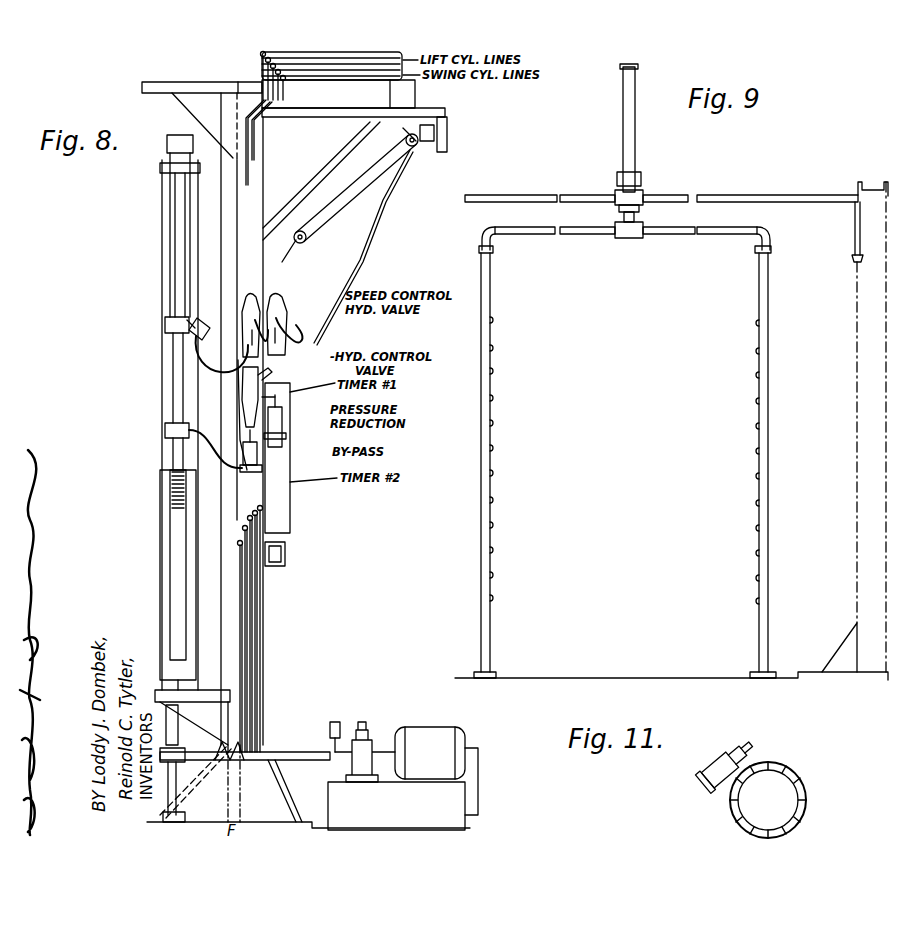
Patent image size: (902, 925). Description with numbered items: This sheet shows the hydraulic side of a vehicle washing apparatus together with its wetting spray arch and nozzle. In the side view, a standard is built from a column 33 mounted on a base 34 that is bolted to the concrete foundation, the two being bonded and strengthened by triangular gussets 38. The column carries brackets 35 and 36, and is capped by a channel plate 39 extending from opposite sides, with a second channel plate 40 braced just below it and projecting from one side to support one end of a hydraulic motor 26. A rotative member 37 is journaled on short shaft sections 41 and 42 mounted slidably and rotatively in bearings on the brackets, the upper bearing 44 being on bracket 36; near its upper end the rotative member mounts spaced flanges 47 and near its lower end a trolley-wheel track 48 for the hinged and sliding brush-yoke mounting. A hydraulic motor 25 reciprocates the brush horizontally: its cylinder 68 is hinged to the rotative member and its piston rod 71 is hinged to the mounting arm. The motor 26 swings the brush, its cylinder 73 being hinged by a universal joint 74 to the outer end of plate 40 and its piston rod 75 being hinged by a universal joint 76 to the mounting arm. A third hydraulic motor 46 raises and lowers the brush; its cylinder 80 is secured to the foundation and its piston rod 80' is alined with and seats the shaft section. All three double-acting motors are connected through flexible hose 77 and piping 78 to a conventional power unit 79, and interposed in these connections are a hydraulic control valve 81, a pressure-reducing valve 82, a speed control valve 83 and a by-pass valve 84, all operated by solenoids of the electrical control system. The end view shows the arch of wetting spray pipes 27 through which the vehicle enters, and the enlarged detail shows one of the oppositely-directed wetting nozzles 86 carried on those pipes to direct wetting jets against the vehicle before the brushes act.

In FIG. 8, the hydraulic motor 25 is at (164, 371).
In FIG. 8, the hydraulic motor 26 is at (373, 206).
In FIG. 9, the wetting spray pipe 27 is at (490, 514).
In FIG. 8, the column 33 is at (255, 505).
In FIG. 8, the base 34 is at (290, 812).
In FIG. 8, the bracket 35 is at (338, 94).
In FIG. 8, the bracket 36 is at (230, 695).
In FIG. 8, the rotative member 37 is at (162, 263).
In FIG. 8, the triangular gusset 38 is at (278, 778).
In FIG. 8, the channel plate 39 is at (415, 86).
In FIG. 8, the channel plate 40 is at (440, 112).
In FIG. 8, the shaft section 41 is at (178, 112).
In FIG. 8, the shaft section 42 is at (191, 726).
In FIG. 8, the bearing 44 is at (178, 688).
In FIG. 8, the hydraulic motor 46 is at (159, 796).
In FIG. 8, the flange 47 is at (180, 200).
In FIG. 8, the trolley-wheel track 48 is at (168, 522).
In FIG. 8, the cylinder 68 is at (170, 292).
In FIG. 8, the piston rod 71 is at (176, 447).
In FIG. 8, the cylinder 73 is at (392, 175).
In FIG. 8, the universal joint 74 is at (436, 148).
In FIG. 8, the piston rod 75 is at (305, 244).
In FIG. 8, the universal joint 76 is at (203, 318).
In FIG. 8, the flexible hose 77 is at (362, 250).
In FIG. 8, the piping 78 is at (268, 620).
In FIG. 8, the power unit 79 is at (394, 722).
In FIG. 8, the cylinder 80 is at (202, 780).
In FIG. 8, the piston rod 80' is at (245, 732).
In FIG. 8, the hydraulic control valve 81 is at (262, 383).
In FIG. 8, the pressure-reducing valve 82 is at (284, 418).
In FIG. 8, the speed control valve 83 is at (278, 310).
In FIG. 8, the by-pass valve 84 is at (262, 466).
In FIG. 11, the wetting spray nozzle 86 is at (728, 758).